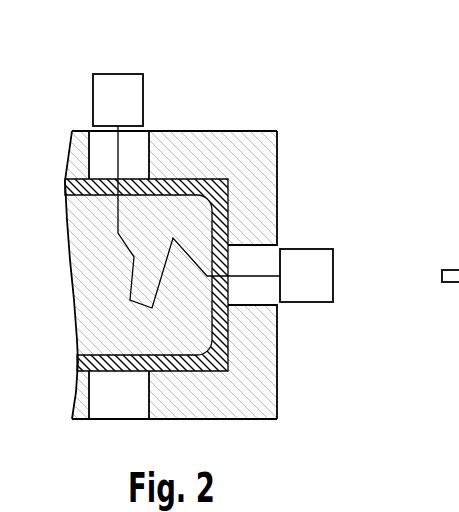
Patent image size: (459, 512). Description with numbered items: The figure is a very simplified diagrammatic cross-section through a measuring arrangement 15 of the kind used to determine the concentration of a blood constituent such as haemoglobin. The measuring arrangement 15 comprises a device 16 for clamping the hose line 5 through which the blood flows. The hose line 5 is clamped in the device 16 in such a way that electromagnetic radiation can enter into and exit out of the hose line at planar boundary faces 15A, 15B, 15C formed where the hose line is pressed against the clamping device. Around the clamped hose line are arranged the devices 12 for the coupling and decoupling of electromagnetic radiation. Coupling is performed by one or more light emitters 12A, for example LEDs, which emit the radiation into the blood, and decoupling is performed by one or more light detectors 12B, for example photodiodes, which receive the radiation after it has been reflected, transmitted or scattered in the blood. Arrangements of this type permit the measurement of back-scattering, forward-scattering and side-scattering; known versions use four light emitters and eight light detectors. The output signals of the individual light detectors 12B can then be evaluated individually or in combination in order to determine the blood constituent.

The hose line 5 is at (88, 187).
The devices for the coupling and decoupling of electromagnetic radiation 12 is at (147, 71).
The light emitter 12A is at (117, 87).
The light detector 12B is at (309, 278).
The measuring arrangement 15 is at (216, 111).
The planar boundary face 15A is at (258, 168).
The planar boundary face 15B is at (226, 220).
The planar boundary face 15C is at (205, 366).
The device for clamping the hose line 16 is at (192, 138).